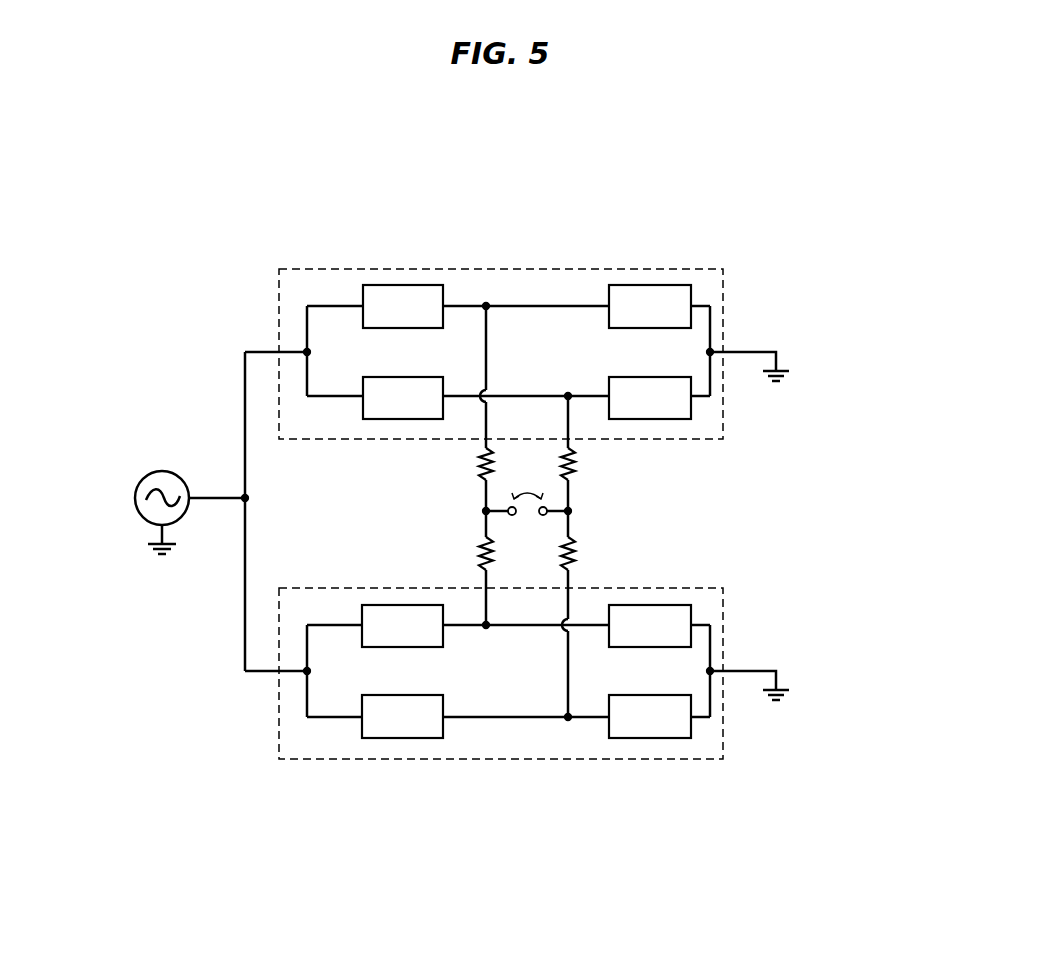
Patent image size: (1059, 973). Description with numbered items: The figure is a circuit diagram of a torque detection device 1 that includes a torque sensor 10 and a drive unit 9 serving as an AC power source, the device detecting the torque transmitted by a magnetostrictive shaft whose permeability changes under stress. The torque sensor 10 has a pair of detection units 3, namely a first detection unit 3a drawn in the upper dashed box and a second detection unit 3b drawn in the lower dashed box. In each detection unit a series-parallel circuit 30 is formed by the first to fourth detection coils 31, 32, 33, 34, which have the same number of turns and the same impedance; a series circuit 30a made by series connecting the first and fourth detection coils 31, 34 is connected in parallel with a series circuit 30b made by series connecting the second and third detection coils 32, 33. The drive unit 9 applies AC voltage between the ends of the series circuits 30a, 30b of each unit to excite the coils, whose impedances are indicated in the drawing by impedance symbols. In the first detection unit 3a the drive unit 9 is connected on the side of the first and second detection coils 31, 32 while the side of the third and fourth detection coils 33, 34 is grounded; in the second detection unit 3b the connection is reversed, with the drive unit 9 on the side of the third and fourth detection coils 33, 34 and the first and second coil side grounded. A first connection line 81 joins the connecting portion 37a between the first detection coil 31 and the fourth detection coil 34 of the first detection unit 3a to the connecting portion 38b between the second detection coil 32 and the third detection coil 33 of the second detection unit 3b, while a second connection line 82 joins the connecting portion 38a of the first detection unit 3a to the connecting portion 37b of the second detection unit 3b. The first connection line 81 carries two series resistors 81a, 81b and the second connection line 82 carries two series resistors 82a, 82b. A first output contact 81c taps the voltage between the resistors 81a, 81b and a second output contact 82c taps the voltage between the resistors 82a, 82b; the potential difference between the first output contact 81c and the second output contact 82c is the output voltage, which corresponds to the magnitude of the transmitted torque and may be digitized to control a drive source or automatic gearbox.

The torque detection device 1 is at (174, 176).
The pair of detection units 3 is at (275, 784).
The first detection unit 3a is at (723, 265).
The second detection unit 3b is at (723, 585).
The drive unit 9 is at (155, 471).
The torque sensor 10 is at (268, 213).
The series-parallel circuit 30 is at (296, 313).
The series circuit 30a is at (333, 300).
The series circuit 30b is at (337, 409).
The first detection coil 31 is at (386, 285).
The second detection coil 32 is at (395, 420).
The third detection coil 33 is at (678, 420).
The fourth detection coil 34 is at (637, 285).
The connecting portion 37a is at (525, 305).
The connecting portion 37b is at (505, 721).
The connecting portion 38a is at (524, 395).
The connecting portion 38b is at (505, 631).
The first connection line 81 is at (484, 531).
The resistor 81a is at (485, 469).
The resistor 81b is at (484, 553).
The first output contact 81c is at (505, 509).
The second connection line 82 is at (570, 531).
The resistor 82a is at (571, 469).
The resistor 82b is at (575, 549).
The second output contact 82c is at (550, 509).